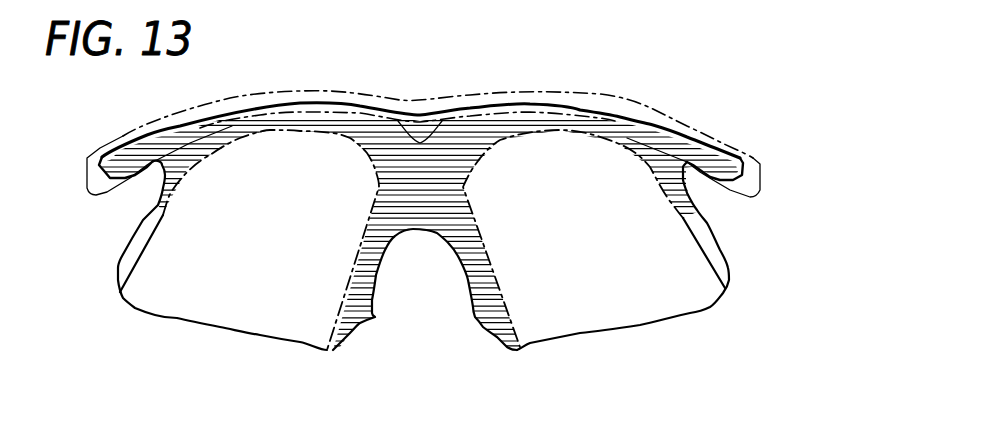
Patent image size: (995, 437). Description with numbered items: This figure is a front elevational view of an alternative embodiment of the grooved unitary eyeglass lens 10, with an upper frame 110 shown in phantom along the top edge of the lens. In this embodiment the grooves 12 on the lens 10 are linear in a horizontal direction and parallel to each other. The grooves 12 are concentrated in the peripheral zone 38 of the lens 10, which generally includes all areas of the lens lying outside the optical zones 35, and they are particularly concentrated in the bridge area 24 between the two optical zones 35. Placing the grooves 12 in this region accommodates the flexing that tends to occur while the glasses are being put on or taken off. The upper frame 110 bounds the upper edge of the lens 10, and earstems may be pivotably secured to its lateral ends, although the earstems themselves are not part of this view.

The eyeglass lens 10 is at (737, 257).
The grooves 12 is at (437, 158).
The bridge area 24 is at (412, 163).
The optical zone 35 is at (618, 297).
The peripheral zone 38 is at (405, 210).
The upper frame 110 is at (603, 98).